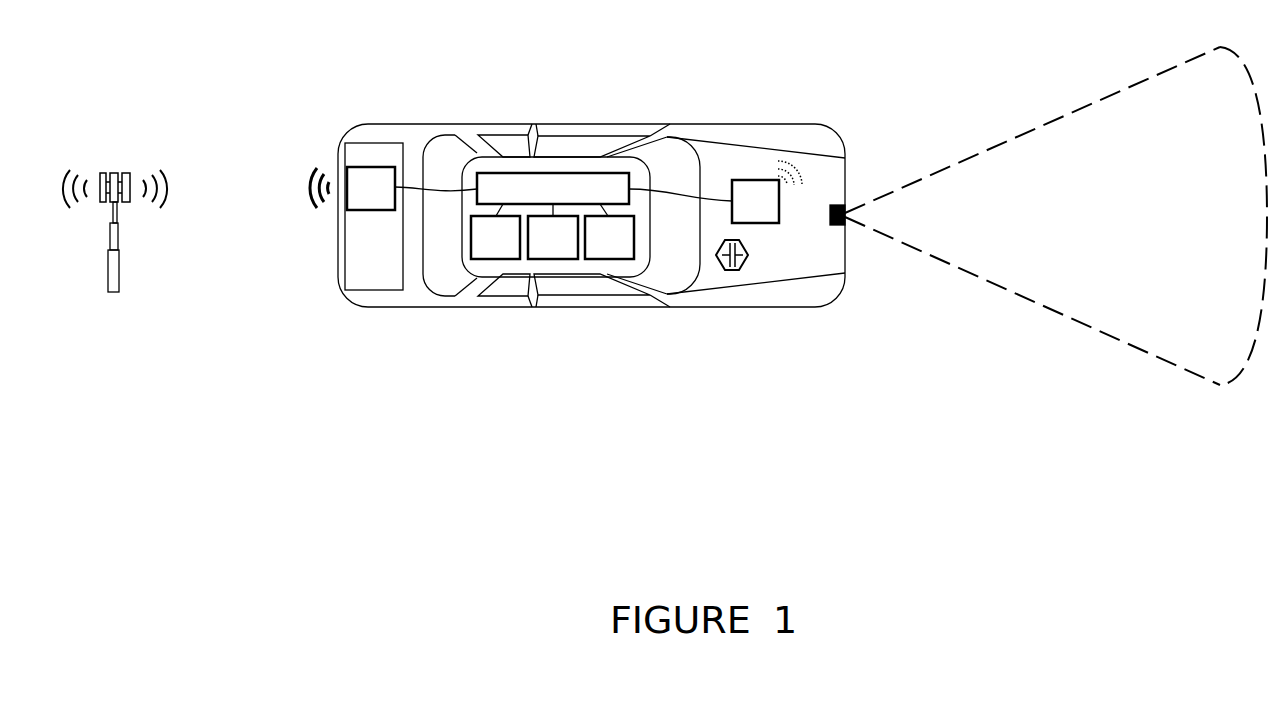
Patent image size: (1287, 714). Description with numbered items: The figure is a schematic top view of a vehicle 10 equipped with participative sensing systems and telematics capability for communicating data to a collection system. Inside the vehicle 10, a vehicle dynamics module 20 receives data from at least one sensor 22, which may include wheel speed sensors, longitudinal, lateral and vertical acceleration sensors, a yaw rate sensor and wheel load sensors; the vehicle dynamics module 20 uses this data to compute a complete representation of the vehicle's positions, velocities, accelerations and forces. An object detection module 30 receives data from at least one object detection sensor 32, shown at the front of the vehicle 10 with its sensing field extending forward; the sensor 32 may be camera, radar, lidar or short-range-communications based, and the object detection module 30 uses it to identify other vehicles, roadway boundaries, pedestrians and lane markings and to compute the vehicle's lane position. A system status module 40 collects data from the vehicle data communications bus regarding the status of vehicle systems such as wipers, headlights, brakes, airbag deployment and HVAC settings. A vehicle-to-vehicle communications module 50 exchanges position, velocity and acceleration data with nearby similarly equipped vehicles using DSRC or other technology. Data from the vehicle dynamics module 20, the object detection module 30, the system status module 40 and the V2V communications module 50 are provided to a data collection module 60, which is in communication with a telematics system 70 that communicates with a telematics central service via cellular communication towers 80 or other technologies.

The vehicle 10 is at (422, 124).
The vehicle dynamics module 20 is at (495, 237).
The sensor 22 is at (733, 270).
The object detection module 30 is at (553, 237).
The object detection sensor 32 is at (845, 223).
The system status module 40 is at (609, 237).
The vehicle-to-vehicle (V2V) communications module 50 is at (755, 201).
The data collection module 60 is at (604, 194).
The telematics system 70 is at (412, 188).
The cellular communication tower 80 is at (108, 267).